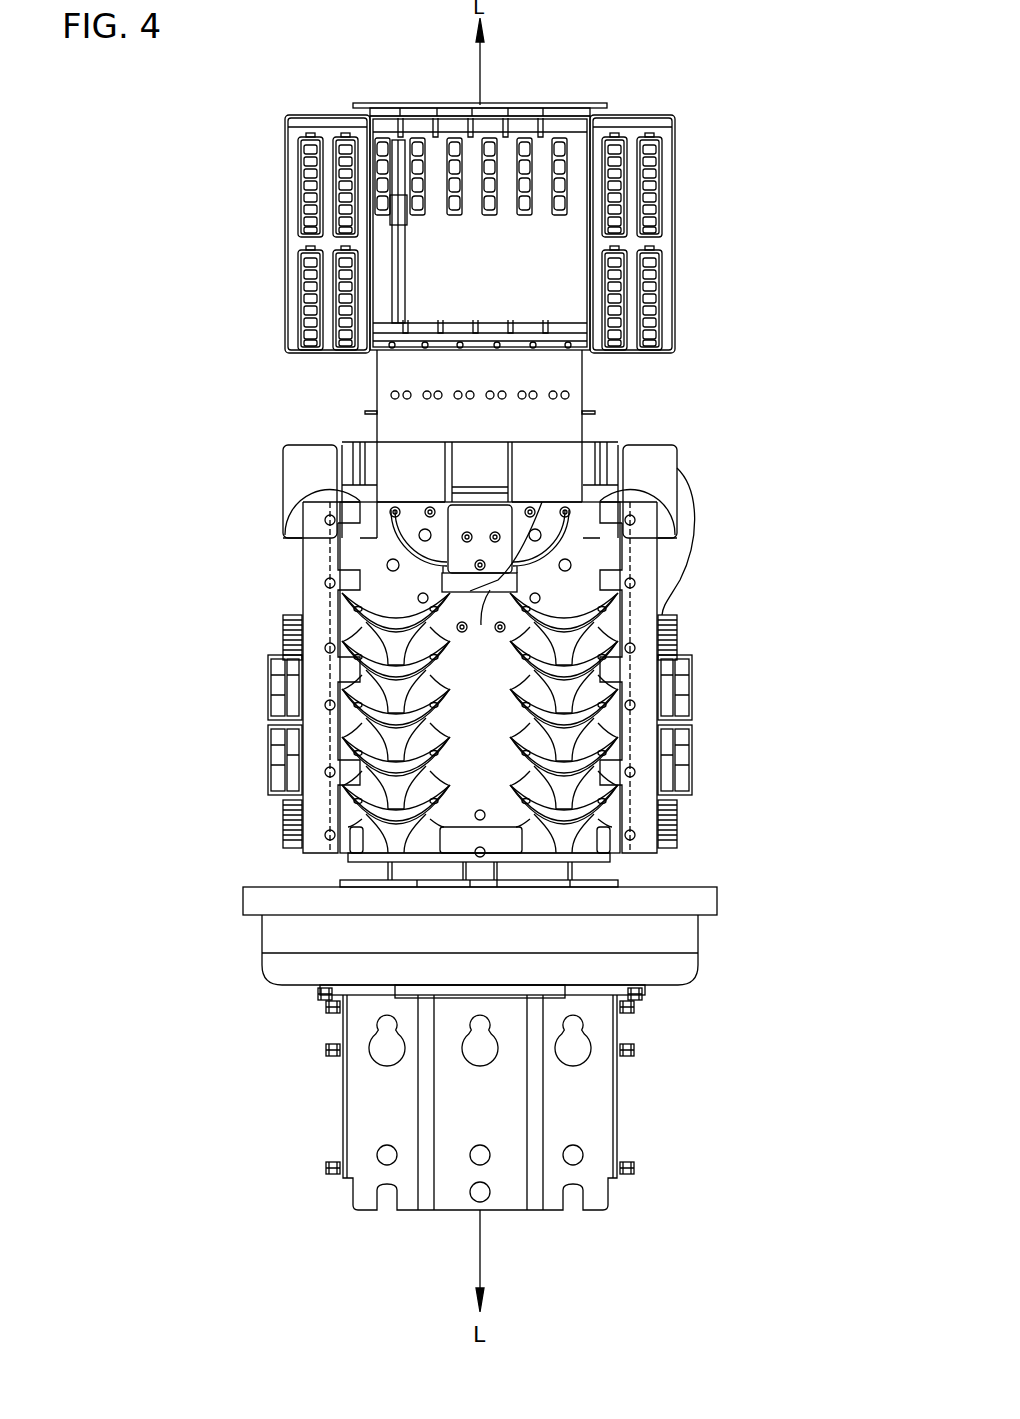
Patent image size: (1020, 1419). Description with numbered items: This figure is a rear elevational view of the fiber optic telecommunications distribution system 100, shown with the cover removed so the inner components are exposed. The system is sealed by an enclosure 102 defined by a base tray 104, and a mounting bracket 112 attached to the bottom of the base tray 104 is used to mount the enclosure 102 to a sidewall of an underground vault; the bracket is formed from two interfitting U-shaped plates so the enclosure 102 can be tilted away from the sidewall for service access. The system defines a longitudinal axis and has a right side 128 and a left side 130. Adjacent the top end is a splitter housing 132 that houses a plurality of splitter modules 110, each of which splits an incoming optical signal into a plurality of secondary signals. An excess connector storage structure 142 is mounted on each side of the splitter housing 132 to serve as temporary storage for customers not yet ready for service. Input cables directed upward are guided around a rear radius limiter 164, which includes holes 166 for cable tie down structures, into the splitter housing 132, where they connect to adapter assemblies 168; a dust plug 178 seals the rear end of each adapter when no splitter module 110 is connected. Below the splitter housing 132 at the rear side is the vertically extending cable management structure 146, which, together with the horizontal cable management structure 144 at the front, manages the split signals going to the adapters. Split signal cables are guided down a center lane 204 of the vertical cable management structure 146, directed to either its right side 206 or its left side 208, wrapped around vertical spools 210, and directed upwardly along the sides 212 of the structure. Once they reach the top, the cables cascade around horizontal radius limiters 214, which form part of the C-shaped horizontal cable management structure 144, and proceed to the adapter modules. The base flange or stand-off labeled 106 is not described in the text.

The fiber optic telecommunications distribution system 100 is at (170, 385).
The enclosure 102 is at (273, 938).
The base tray 104 is at (688, 937).
The base flange 106 is at (710, 900).
The splitter module 110 is at (398, 278).
The mounting bracket 112 is at (602, 1098).
The right side 128 is at (690, 478).
The left side 130 is at (287, 483).
The splitter housing 132 is at (595, 240).
The excess connector storage structure 142 is at (667, 143).
The horizontal cable management structure 144 is at (670, 457).
The vertically extending cable management structure 146 is at (608, 718).
The rear radius limiter 164 is at (568, 418).
The holes 166 is at (570, 393).
The adapter assembly 168 is at (452, 212).
The dust plug 178 is at (490, 212).
The center lane 204 is at (500, 677).
The right side 206 is at (322, 603).
The left side 208 is at (633, 612).
The vertical spools 210 is at (450, 690).
The sides 212 is at (320, 505).
The horizontal radius limiters 214 is at (287, 460).